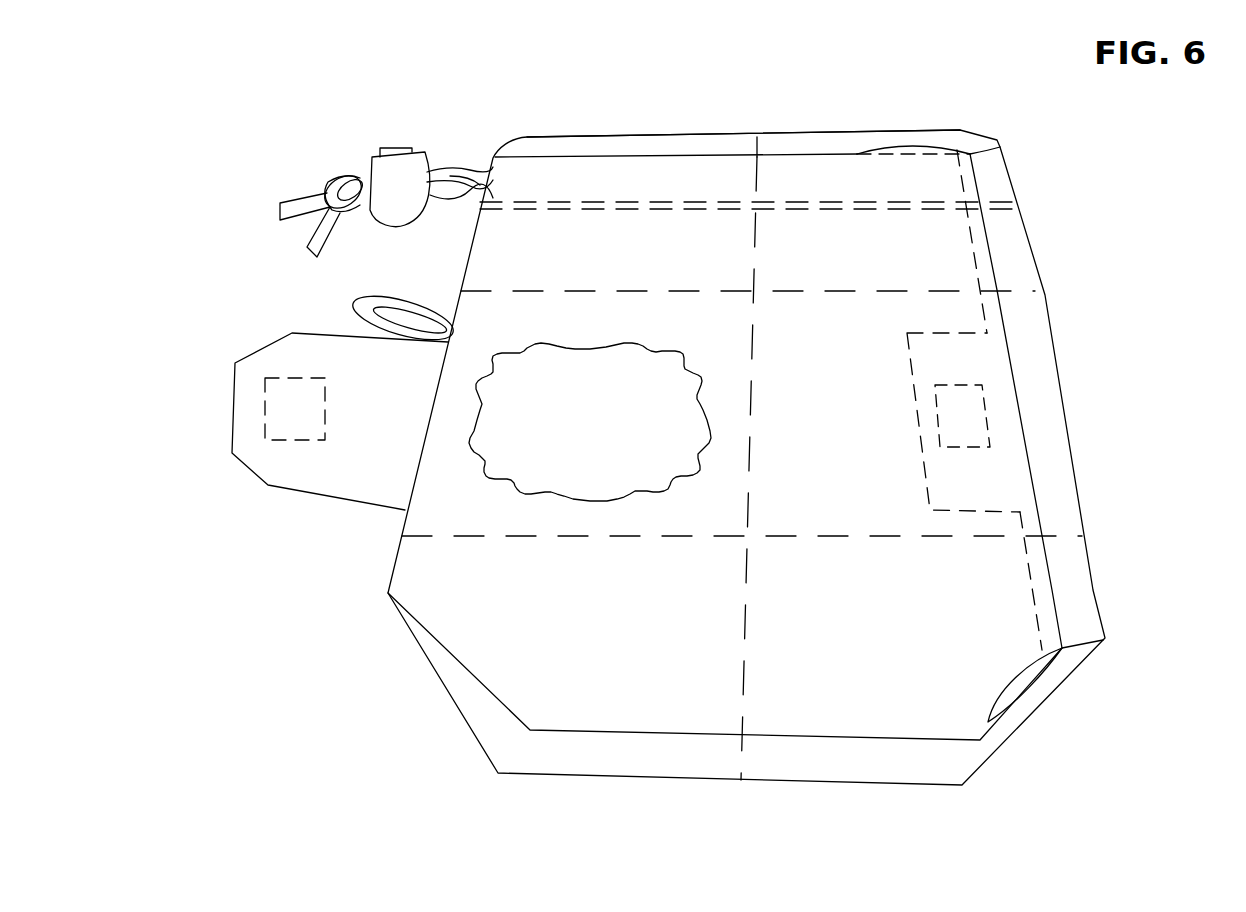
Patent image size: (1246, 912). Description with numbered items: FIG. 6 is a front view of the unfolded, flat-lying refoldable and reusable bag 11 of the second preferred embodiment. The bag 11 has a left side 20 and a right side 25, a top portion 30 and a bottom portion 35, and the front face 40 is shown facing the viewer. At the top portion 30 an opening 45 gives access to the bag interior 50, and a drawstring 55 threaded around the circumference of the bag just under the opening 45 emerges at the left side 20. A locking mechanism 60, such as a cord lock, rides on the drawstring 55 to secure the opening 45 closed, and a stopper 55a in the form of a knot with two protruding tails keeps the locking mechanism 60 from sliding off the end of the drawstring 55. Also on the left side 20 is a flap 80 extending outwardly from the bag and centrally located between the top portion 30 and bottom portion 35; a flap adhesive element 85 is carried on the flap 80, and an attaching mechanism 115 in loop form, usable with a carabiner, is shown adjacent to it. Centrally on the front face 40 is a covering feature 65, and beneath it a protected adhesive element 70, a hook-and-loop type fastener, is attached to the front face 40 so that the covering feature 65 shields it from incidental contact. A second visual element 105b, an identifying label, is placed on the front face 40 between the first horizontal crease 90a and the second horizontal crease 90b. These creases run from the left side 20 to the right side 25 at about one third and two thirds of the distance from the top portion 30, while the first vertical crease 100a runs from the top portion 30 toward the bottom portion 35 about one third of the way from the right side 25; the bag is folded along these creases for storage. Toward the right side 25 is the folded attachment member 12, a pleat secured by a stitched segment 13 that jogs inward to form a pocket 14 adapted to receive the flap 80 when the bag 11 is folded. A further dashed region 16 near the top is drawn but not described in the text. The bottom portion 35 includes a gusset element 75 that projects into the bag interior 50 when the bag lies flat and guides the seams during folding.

The bag 11 is at (1047, 718).
The folded attachment member 12 is at (1008, 350).
The stitched segment 13 is at (1030, 583).
The pocket 14 is at (897, 377).
The upper pocket 16 is at (870, 202).
The left side 20 is at (375, 583).
The right side 25 is at (1072, 452).
The top portion 30 is at (605, 135).
The bottom portion 35 is at (577, 777).
The front face 40 is at (527, 670).
The opening 45 is at (780, 140).
The bag interior 50 is at (665, 147).
The drawstring 55 is at (448, 168).
The stopper 55a is at (322, 167).
The locking mechanism 60 is at (382, 150).
The covering feature 65 is at (968, 483).
The protected adhesive element 70 is at (963, 413).
The gusset element 75 is at (855, 752).
The flap 80 is at (365, 467).
The flap adhesive element 85 is at (300, 423).
The first horizontal crease 90a is at (618, 290).
The second horizontal crease 90b is at (523, 537).
The first vertical crease 100a is at (753, 252).
The second visual element 105b is at (595, 372).
The attaching mechanism 115 is at (353, 310).